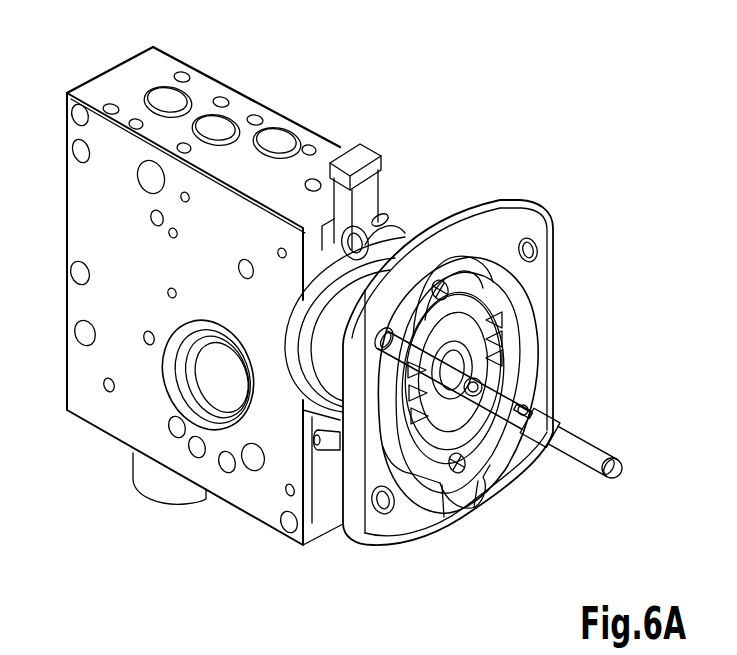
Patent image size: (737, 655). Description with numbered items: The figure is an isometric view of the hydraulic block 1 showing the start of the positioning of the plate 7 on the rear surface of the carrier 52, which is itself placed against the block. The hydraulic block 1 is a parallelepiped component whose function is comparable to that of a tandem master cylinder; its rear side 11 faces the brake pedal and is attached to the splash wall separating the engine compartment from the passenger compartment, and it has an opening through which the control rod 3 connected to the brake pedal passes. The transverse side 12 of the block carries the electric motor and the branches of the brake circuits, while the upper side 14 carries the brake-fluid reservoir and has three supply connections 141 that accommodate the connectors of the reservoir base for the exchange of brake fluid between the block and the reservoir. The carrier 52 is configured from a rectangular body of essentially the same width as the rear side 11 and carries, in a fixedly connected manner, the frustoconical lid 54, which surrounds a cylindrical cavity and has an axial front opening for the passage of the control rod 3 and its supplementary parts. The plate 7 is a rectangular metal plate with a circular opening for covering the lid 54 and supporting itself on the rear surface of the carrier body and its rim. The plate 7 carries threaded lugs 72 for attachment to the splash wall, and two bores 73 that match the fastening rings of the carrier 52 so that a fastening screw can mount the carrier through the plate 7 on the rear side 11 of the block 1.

The hydraulic block 1 is at (297, 111).
The rear side 11 is at (319, 490).
The transverse side 12 is at (108, 214).
The upper side 14 is at (125, 87).
The supply connections 141 is at (275, 138).
The carrier 52 is at (403, 232).
The frustoconical lid 54 is at (474, 337).
The plate 7 is at (517, 213).
The threaded lugs 72 is at (593, 451).
The bores 73 is at (445, 290).
The control rod 3 is at (548, 411).